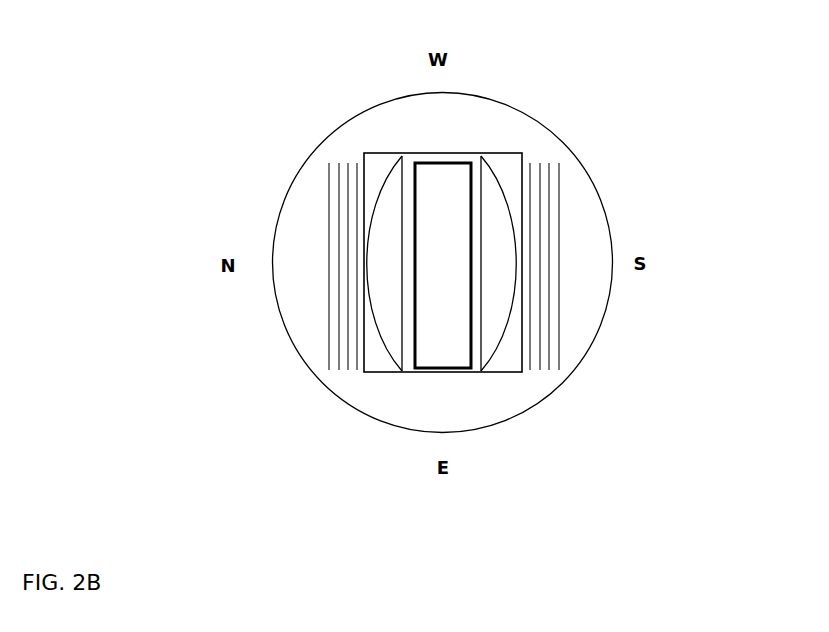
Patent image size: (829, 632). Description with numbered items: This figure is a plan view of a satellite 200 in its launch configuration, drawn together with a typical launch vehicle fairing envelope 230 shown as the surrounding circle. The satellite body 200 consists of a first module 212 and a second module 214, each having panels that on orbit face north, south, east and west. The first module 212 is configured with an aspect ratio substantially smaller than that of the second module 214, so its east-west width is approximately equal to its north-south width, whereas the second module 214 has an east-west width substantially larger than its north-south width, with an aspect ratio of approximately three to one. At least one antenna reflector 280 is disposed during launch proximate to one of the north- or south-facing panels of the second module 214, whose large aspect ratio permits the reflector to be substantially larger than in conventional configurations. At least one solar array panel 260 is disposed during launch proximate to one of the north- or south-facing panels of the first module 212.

The satellite body 200 is at (150, 178).
The first module 212 is at (376, 166).
The second module 214 is at (443, 187).
The launch vehicle fairing envelope 230 is at (532, 117).
The solar array panel 260 is at (333, 263).
The antenna reflector 280 is at (496, 182).